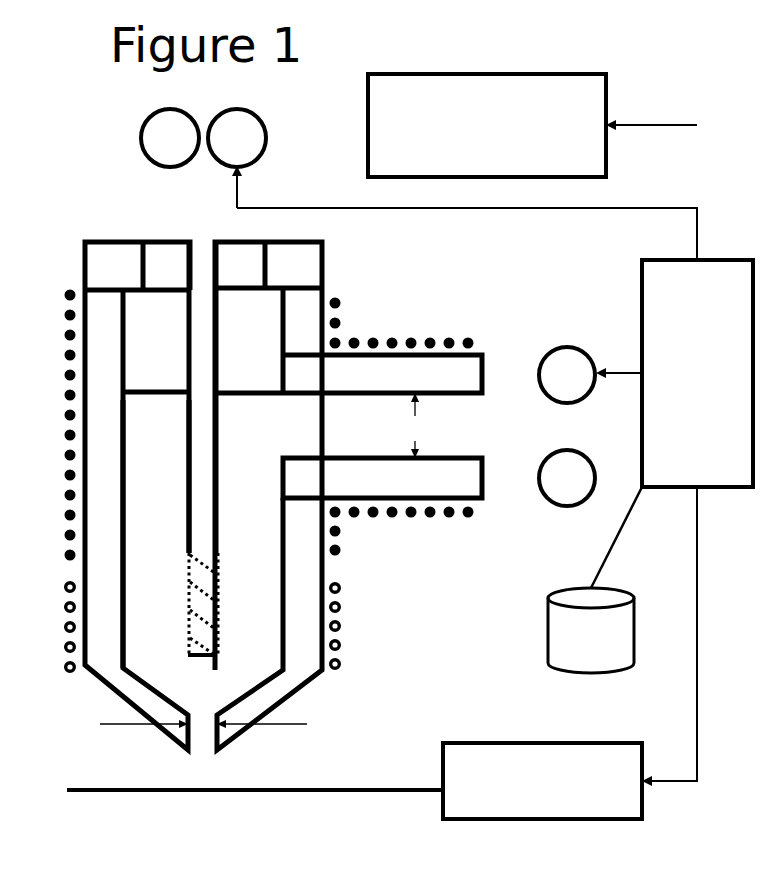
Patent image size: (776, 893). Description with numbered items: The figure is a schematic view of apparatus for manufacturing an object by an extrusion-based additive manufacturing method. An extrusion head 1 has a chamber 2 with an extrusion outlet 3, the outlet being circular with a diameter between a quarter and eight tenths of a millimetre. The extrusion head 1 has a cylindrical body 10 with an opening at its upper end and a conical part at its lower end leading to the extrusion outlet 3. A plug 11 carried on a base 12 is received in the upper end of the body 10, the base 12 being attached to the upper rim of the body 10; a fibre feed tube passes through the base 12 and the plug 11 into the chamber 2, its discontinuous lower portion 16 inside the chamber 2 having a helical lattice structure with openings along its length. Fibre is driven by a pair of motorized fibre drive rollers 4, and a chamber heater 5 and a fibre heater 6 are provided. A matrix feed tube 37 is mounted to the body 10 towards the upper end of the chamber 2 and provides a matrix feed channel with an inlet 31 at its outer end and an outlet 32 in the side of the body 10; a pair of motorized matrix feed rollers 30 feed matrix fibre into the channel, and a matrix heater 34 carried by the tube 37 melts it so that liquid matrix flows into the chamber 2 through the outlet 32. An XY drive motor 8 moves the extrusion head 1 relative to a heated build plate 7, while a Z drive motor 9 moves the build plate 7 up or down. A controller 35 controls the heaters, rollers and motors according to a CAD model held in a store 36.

The extrusion head 1 is at (358, 570).
The chamber 2 is at (146, 512).
The extrusion outlet 3 is at (203, 740).
The motorized fibre drive rollers 4 is at (225, 111).
The chamber heater 5 is at (68, 431).
The fibre heater 6 is at (66, 645).
The heated build plate 7 is at (358, 787).
The XY drive motor 8 is at (487, 125).
The Z drive motor 9 is at (542, 781).
The cylindrical body 10 is at (107, 617).
The plug 11 is at (161, 323).
The base 12 is at (103, 264).
The discontinuous lower portion of fibre feed tube 16 is at (189, 597).
The matrix feed rollers 30 is at (583, 462).
The inlet of matrix feed channel 31 is at (468, 429).
The outlet of matrix feed channel 32 is at (287, 429).
The matrix heater 34 is at (411, 338).
The controller 35 is at (674, 373).
The store 36 is at (595, 580).
The matrix feed tube 37 is at (334, 370).